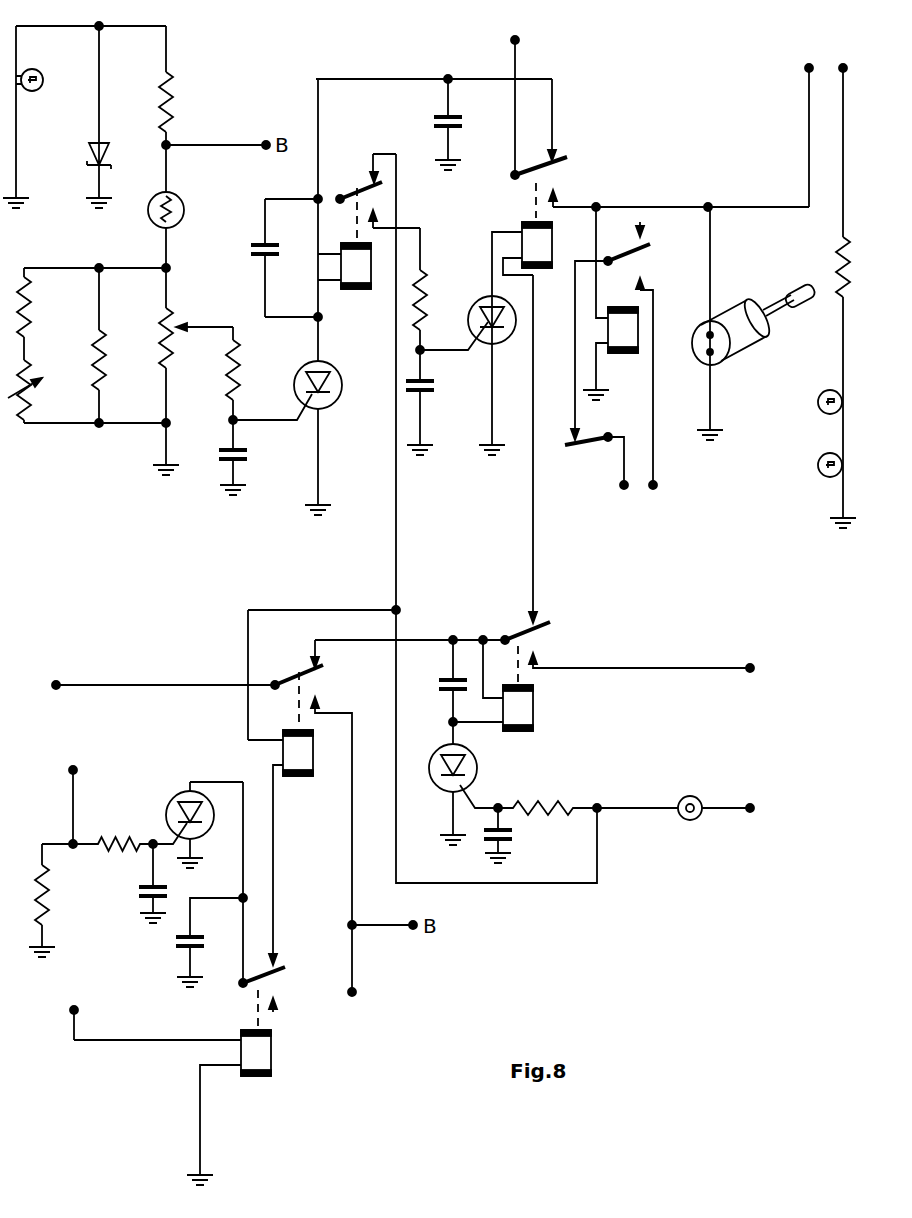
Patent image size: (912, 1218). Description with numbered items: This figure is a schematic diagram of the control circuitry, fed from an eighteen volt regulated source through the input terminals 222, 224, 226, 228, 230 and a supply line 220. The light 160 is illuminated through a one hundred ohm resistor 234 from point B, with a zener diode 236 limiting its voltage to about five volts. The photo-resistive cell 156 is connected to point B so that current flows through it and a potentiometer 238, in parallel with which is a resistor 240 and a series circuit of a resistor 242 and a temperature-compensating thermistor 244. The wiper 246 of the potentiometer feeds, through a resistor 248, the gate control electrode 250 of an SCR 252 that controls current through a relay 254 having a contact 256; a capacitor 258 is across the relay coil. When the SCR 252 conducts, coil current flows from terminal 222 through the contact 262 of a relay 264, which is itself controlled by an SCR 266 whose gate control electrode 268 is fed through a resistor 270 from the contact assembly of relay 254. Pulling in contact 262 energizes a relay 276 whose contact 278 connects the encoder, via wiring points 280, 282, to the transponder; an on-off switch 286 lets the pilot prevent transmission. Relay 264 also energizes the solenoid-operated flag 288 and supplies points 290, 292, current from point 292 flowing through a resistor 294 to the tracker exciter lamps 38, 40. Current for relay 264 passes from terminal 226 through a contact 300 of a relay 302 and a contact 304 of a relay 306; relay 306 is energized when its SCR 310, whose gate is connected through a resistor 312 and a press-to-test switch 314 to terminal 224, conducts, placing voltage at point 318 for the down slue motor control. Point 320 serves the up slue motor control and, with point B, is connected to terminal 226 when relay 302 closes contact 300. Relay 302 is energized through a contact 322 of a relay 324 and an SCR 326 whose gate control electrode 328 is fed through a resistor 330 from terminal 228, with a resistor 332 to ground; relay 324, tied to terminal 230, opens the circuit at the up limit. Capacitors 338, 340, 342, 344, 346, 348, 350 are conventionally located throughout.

The exciter lamp 38 is at (817, 407).
The exciter lamp 40 is at (818, 462).
The photo-resistive cell 156 is at (180, 222).
The light 160 is at (44, 75).
The supply line 220 is at (453, 56).
The input terminal 222 is at (519, 42).
The input terminal 224 is at (750, 805).
The input terminal 226 is at (57, 681).
The input terminal 228 is at (76, 770).
The input terminal 230 is at (76, 1008).
The resistor 234 is at (175, 97).
The zener diode 236 is at (104, 142).
The potentiometer 238 is at (166, 312).
The resistor 240 is at (104, 352).
The resistor 242 is at (30, 305).
The thermistor 244 is at (32, 395).
The wiper 246 is at (180, 322).
The resistor 248 is at (238, 388).
The gate control electrode 250 is at (295, 420).
The SCR 252 is at (334, 402).
The relay 254 is at (358, 290).
The contact 256 is at (380, 190).
The capacitor 258 is at (270, 242).
The contact 262 is at (570, 160).
The relay 264 is at (545, 248).
The SCR 266 is at (478, 297).
The gate control electrode 268 is at (468, 352).
The resistor 270 is at (439, 291).
The relay 276 is at (624, 353).
The contact 278 is at (648, 253).
The wiring point 280 is at (655, 488).
The wiring point 282 is at (624, 488).
The on-off switch 286 is at (585, 447).
The solenoid-operated flag 288 is at (743, 348).
The point 290 is at (805, 70).
The point 292 is at (846, 68).
The resistor 294 is at (843, 250).
The contact 300 is at (325, 672).
The relay 302 is at (300, 755).
The contact 304 is at (553, 628).
The relay 306 is at (525, 705).
The SCR 310 is at (478, 758).
The resistor 312 is at (553, 803).
The press-to-test switch 314 is at (698, 795).
The point 318 is at (750, 665).
The point 320 is at (355, 994).
The contact 322 is at (284, 974).
The relay 324 is at (268, 1055).
The SCR 326 is at (178, 796).
The gate control electrode 328 is at (177, 838).
The resistor 330 is at (122, 839).
The resistor 332 is at (47, 888).
The capacitor 338 is at (442, 117).
The capacitor 340 is at (232, 449).
The capacitor 342 is at (430, 392).
The capacitor 344 is at (508, 828).
The capacitor 346 is at (450, 678).
The capacitor 348 is at (182, 950).
The capacitor 350 is at (148, 897).